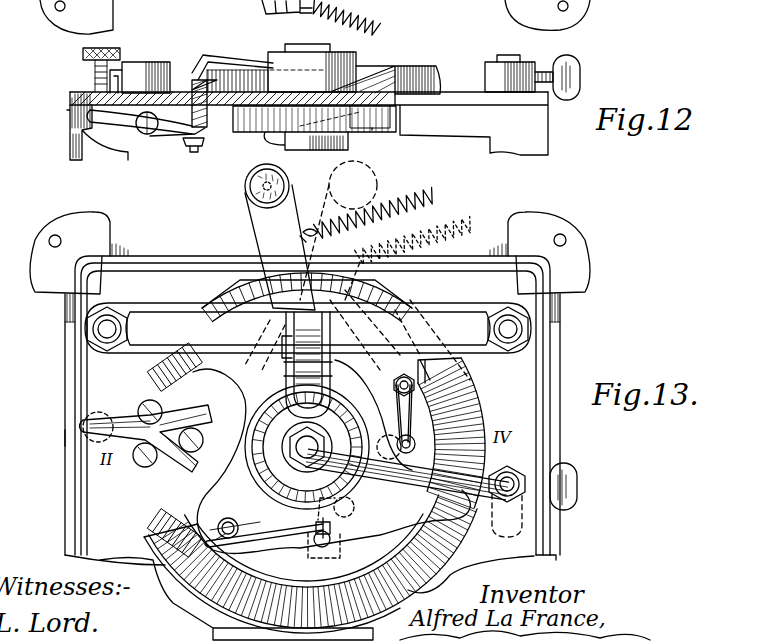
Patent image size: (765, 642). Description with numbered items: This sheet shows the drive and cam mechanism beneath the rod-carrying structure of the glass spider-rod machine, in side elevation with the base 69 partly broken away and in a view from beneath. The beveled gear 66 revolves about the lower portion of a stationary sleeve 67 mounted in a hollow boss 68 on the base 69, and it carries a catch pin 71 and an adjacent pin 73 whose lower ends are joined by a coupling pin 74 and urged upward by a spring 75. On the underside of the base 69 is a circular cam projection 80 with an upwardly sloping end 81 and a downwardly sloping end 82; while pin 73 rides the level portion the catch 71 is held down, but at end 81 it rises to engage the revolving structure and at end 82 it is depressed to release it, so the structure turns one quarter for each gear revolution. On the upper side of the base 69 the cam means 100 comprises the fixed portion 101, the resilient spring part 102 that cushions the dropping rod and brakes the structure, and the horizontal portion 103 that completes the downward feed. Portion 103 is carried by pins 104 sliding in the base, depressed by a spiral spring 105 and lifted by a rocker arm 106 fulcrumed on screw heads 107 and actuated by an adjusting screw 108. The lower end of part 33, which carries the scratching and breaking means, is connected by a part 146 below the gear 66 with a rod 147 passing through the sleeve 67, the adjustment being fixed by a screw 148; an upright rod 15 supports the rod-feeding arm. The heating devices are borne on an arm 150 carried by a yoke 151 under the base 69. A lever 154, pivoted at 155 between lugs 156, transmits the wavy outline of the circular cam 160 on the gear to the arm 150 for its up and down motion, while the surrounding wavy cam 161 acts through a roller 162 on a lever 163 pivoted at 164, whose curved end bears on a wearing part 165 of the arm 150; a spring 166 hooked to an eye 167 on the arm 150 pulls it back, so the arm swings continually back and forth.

In FIG. 12, the upright rod 15 is at (140, 60).
In FIG. 12, the part carrying the scratching and breaking means 33 is at (500, 62).
In FIG. 13, the beveled gear 66 is at (310, 564).
In FIG. 12, the stationary sleeve 67 is at (330, 54).
In FIG. 12, the hollow boss 68 is at (356, 60).
In FIG. 12, the base 69 is at (70, 114).
In FIG. 13, the base 69 is at (65, 438).
In FIG. 13, the catch pin 71 is at (314, 548).
In FIG. 13, the actuating pin 73 is at (336, 508).
In FIG. 13, the coupling pin 74 is at (330, 531).
In FIG. 13, the spring 75 is at (246, 538).
In FIG. 12, the cam projection 80 is at (262, 130).
In FIG. 12, the upwardly sloping cam end 81 is at (372, 118).
In FIG. 12, the downwardly sloping cam end 82 is at (372, 130).
In FIG. 12, the cam means 100 is at (385, 68).
In FIG. 12, the fixed cam portion 101 is at (438, 84).
In FIG. 12, the spring cam part 102 is at (232, 64).
In FIG. 12, the adjustable cam portion 103 is at (196, 80).
In FIG. 12, the pins 104 is at (199, 153).
In FIG. 13, the pins 104 is at (198, 434).
In FIG. 12, the spiral spring 105 is at (186, 134).
In FIG. 12, the rocker arm 106 is at (125, 128).
In FIG. 13, the rocker arm 106 is at (134, 413).
In FIG. 12, the screw heads 107 is at (146, 134).
In FIG. 13, the screw heads 107 is at (152, 404).
In FIG. 12, the adjusting screw 108 is at (95, 68).
In FIG. 13, the connecting part 146 is at (405, 500).
In FIG. 12, the rod 147 is at (333, 142).
In FIG. 12, the screw 148 is at (580, 72).
In FIG. 13, the screw 148 is at (578, 490).
In FIG. 13, the arm 150 is at (252, 226).
In FIG. 13, the yoke or beam 151 is at (445, 310).
In FIG. 13, the lever 154 is at (286, 364).
In FIG. 13, the lever pivot 155 is at (284, 378).
In FIG. 13, the lugs 156 is at (332, 364).
In FIG. 13, the circular cam 160 is at (262, 416).
In FIG. 13, the cam 161 is at (248, 494).
In FIG. 13, the roller 162 is at (414, 445).
In FIG. 13, the lever 163 is at (416, 410).
In FIG. 13, the lever pivot 164 is at (357, 335).
In FIG. 13, the wearing part 165 is at (312, 300).
In FIG. 13, the spring 166 is at (386, 215).
In FIG. 13, the eye 167 is at (310, 232).